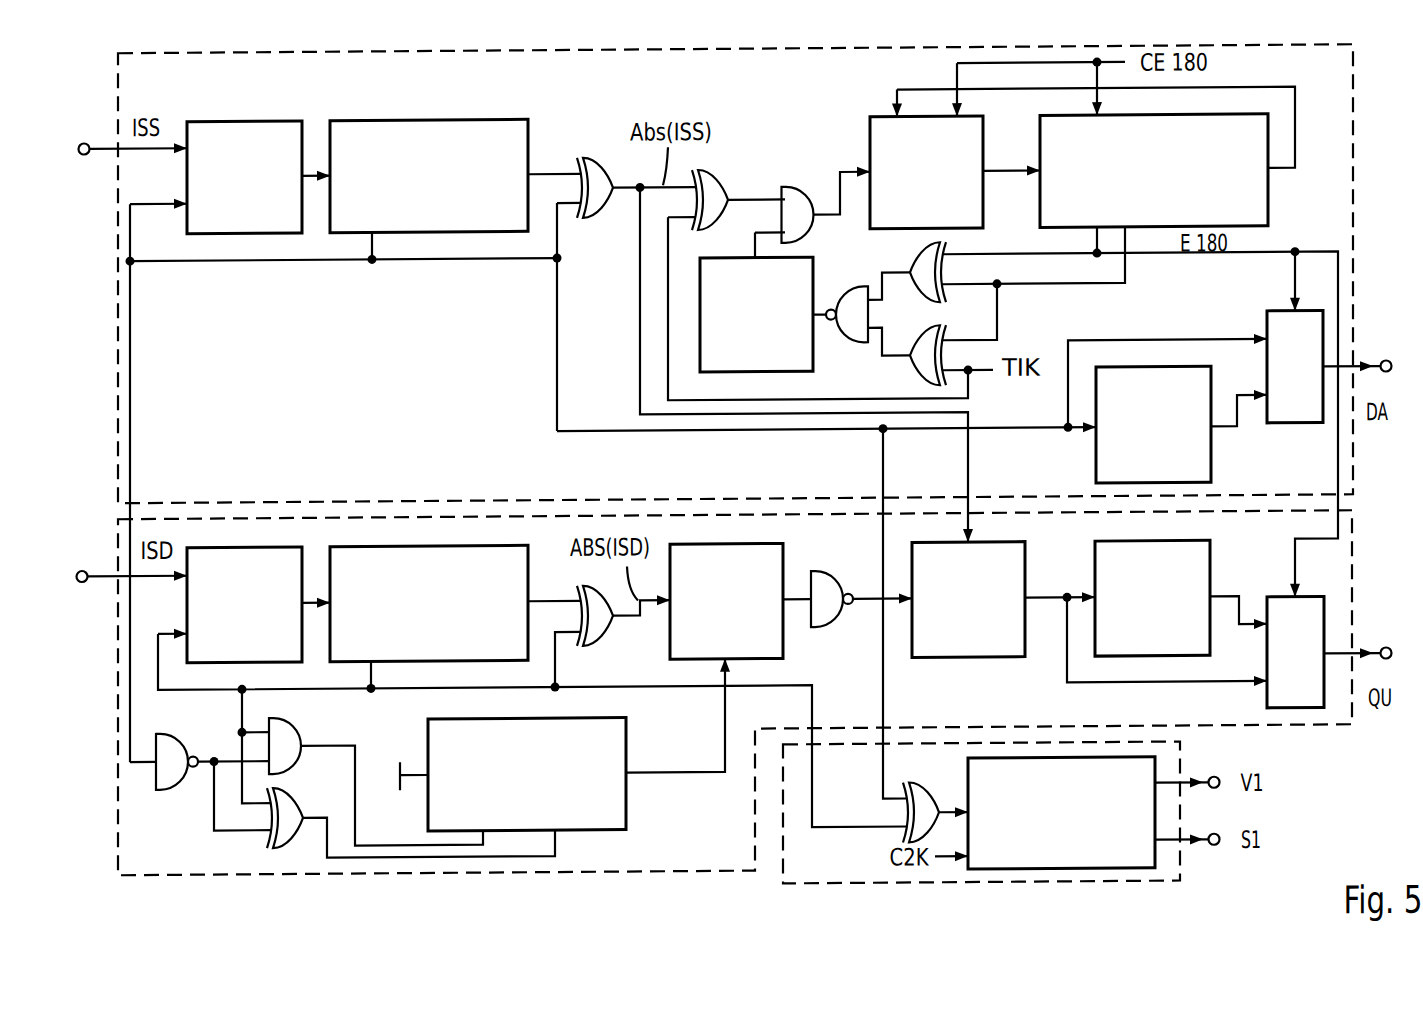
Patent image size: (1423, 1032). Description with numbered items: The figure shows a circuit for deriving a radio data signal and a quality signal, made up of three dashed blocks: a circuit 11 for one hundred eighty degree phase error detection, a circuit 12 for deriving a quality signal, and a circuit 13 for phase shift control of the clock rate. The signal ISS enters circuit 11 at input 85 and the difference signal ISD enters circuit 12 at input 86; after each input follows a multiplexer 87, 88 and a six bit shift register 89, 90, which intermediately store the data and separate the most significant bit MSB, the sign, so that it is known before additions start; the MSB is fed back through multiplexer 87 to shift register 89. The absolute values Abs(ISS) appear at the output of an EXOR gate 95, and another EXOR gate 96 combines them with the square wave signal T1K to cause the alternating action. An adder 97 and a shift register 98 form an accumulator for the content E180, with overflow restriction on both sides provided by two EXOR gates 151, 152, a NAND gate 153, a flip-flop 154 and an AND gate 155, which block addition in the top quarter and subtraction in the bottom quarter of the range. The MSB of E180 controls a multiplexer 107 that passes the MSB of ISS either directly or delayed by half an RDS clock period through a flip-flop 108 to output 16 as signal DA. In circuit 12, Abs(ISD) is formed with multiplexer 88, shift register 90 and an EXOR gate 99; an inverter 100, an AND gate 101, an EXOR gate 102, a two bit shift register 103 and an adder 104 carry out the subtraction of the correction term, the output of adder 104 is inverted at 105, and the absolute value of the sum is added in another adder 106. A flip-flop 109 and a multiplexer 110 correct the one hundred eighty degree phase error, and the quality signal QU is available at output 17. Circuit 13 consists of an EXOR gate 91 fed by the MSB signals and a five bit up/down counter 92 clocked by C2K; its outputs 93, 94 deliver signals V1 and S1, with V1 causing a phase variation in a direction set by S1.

The circuit for 180° phase error detection 11 is at (1337, 121).
The quality signal circuit 12 is at (1343, 580).
The phase shift control circuit 13 is at (1174, 874).
The output 16 is at (1386, 365).
The output 17 is at (1387, 653).
The input 85 is at (83, 139).
The input 86 is at (80, 566).
The multiplexer 87 is at (268, 117).
The multiplexer 88 is at (203, 599).
The 6 bit shift register 89 is at (473, 117).
The 6 bit shift register 90 is at (513, 554).
The EXOR gate 91 is at (921, 789).
The 5 bit up/down counter 92 is at (988, 768).
The output 93 is at (1216, 781).
The output 94 is at (1216, 838).
The EXOR gate 95 is at (600, 171).
The EXOR gate 96 is at (720, 187).
The adder 97 is at (870, 124).
The 8 bit shift register 98 is at (1262, 206).
The EXOR gate 99 is at (598, 636).
The inverter 100 is at (170, 743).
The AND gate 101 is at (293, 730).
The EXOR gate 102 is at (293, 800).
The 2 bit shift register 103 is at (627, 810).
The adder 104 is at (772, 644).
The inverter 105 is at (827, 583).
The adder 106 is at (1020, 556).
The multiplexer 107 is at (1277, 321).
The flip-flop 108 is at (1213, 466).
The flip-flop 109 is at (1205, 558).
The multiplexer 110 is at (1270, 703).
The EXOR gate 151 is at (920, 268).
The EXOR gate 152 is at (917, 367).
The NAND gate 153 is at (855, 294).
The flip-flop 154 is at (712, 267).
The AND gate 155 is at (797, 197).